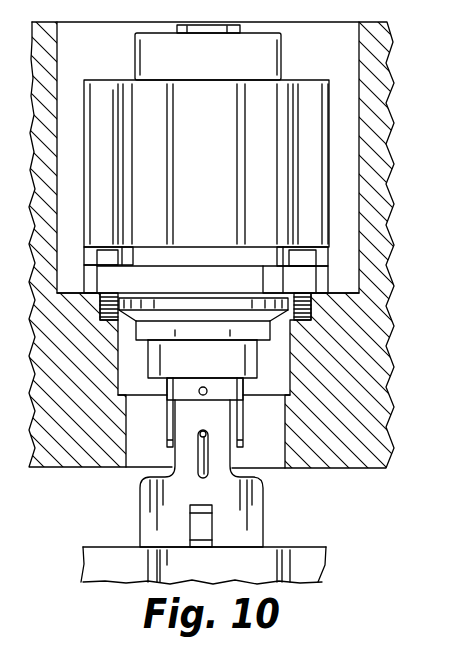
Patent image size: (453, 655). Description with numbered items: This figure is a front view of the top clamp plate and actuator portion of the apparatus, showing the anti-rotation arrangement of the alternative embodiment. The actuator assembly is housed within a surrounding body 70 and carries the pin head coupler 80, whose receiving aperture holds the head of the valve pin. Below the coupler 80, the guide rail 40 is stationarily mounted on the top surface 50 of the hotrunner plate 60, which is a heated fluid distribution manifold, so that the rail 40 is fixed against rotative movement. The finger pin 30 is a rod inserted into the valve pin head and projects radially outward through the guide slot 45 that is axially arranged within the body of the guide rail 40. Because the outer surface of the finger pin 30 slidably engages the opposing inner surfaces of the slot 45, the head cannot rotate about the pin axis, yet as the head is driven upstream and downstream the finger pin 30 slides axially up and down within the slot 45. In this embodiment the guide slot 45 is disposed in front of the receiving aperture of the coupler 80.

The finger pin 30 is at (206, 433).
The guide rail 40 is at (263, 495).
The guide slot 45 is at (207, 464).
The top surface 50 is at (293, 547).
The hotrunner plate 60 is at (328, 568).
The housing 70 is at (148, 353).
The pin head coupler 80 is at (285, 395).